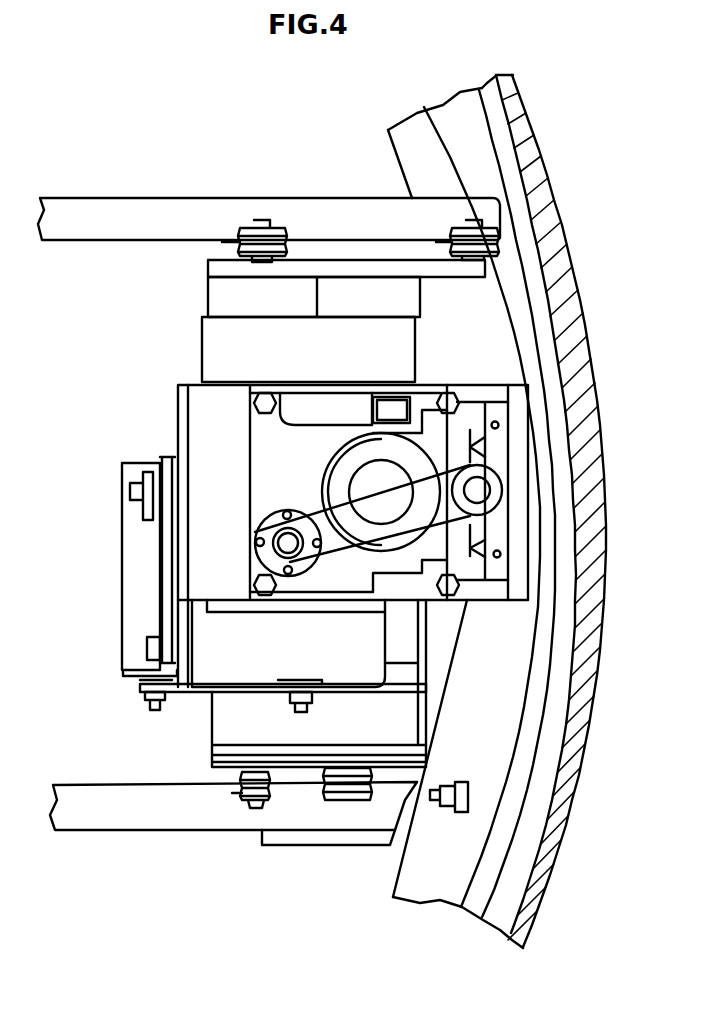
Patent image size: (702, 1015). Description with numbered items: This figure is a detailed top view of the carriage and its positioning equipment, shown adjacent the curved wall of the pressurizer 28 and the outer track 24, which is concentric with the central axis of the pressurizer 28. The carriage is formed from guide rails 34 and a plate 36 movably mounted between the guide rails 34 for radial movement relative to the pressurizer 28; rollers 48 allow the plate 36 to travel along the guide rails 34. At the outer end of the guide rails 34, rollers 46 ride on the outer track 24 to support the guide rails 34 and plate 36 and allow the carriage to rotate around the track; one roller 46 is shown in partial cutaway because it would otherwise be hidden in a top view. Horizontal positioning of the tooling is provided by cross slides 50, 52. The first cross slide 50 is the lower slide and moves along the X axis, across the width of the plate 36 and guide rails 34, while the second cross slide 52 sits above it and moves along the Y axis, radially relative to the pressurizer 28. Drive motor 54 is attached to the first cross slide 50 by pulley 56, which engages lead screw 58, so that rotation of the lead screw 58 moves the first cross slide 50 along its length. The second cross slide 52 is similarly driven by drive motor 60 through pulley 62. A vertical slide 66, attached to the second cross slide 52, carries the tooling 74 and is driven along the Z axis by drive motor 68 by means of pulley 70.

The outer track 24 is at (430, 128).
The pressurizer 28 is at (528, 148).
The guide rails 34 is at (140, 198).
The plate 36 is at (208, 295).
The rollers 46 is at (463, 790).
The rollers 48 is at (280, 222).
The first cross slide 50 is at (383, 364).
The second cross slide 52 is at (213, 415).
The drive motor 54 is at (135, 540).
The pulley 56 is at (197, 694).
The lead screw 58 is at (316, 706).
The drive motor 60 is at (305, 652).
The pulley 62 is at (160, 597).
The vertical slide 66 is at (493, 450).
The drive motor 68 is at (263, 522).
The pulley 70 is at (324, 523).
The tooling 74 is at (394, 458).